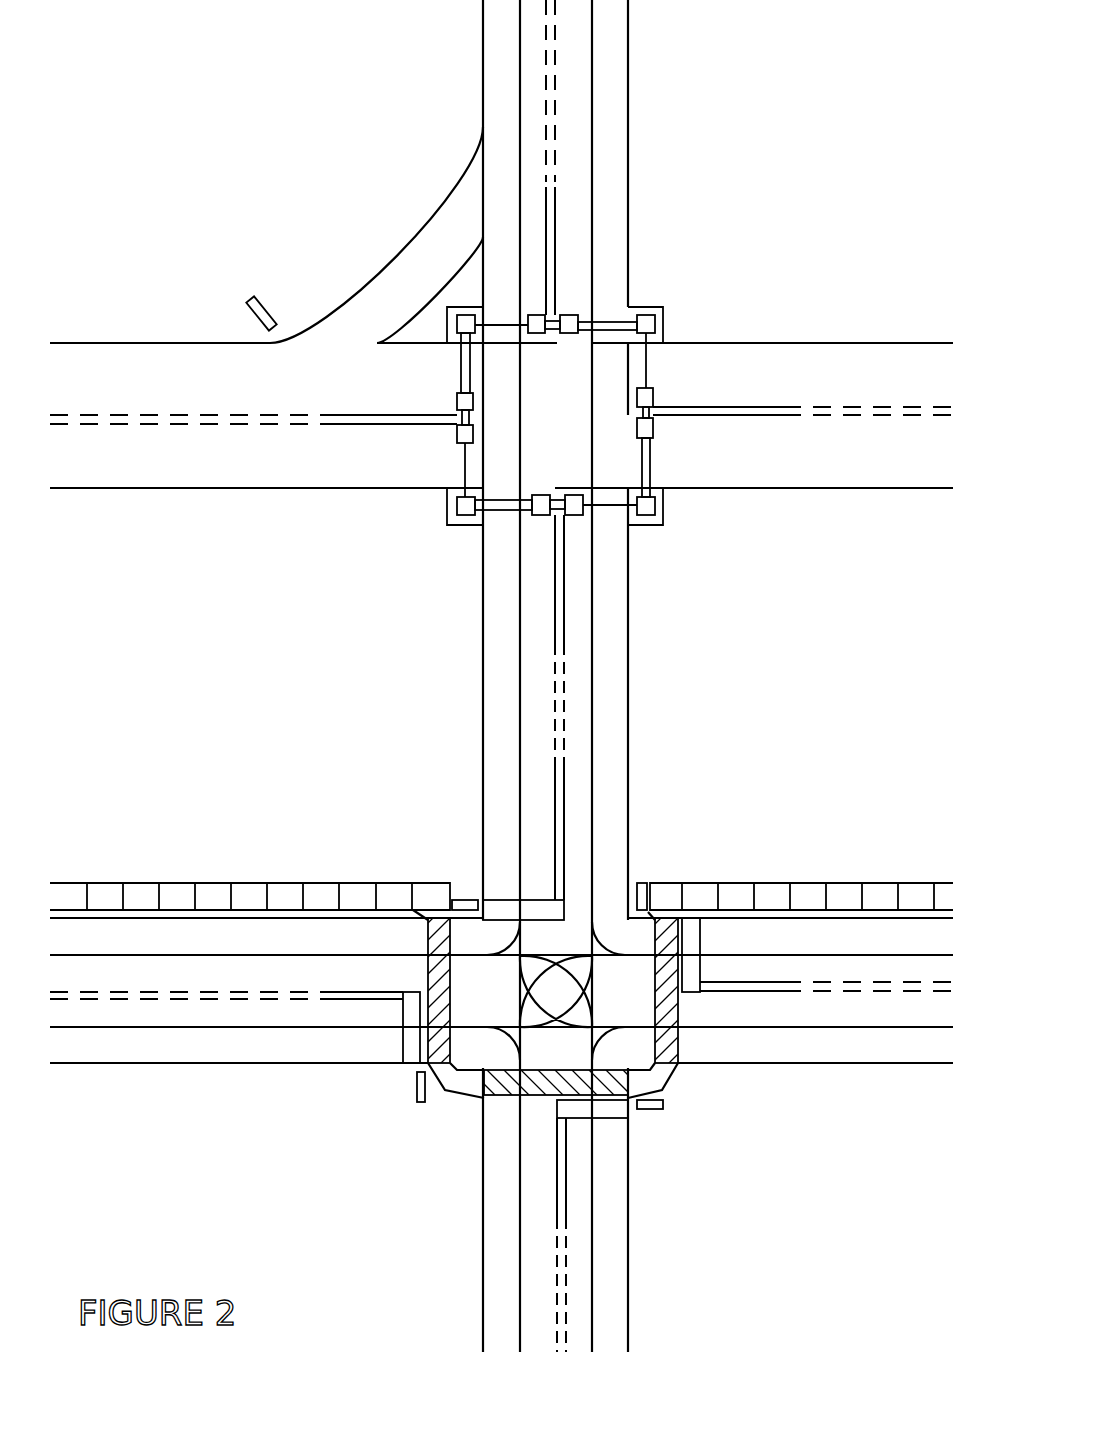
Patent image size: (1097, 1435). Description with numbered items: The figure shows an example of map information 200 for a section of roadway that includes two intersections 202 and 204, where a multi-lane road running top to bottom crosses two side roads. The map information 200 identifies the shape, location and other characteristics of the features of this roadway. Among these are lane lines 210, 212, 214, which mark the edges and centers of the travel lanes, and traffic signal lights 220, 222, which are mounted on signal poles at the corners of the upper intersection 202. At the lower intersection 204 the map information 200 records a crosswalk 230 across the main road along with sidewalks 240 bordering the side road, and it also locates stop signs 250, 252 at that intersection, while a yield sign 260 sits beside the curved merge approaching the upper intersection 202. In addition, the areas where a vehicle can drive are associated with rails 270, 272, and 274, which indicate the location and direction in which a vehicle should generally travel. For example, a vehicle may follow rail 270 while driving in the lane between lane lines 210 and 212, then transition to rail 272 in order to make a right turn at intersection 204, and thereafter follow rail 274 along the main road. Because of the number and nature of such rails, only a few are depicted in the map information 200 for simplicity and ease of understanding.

The map information 200 is at (501, 676).
The intersection 202 is at (462, 437).
The intersection 204 is at (556, 991).
The lane line 210 is at (137, 1000).
The lane line 212 is at (207, 1063).
The lane line 214 is at (557, 92).
The traffic signal light 220 is at (455, 432).
The traffic signal light 222 is at (455, 397).
The crosswalk 230 is at (485, 1082).
The sidewalk 240 is at (728, 883).
The stop sign 250 is at (463, 900).
The stop sign 252 is at (665, 1108).
The yield sign 260 is at (245, 310).
The rail 270 is at (213, 1025).
The rail 272 is at (505, 1040).
The rail 274 is at (520, 1297).